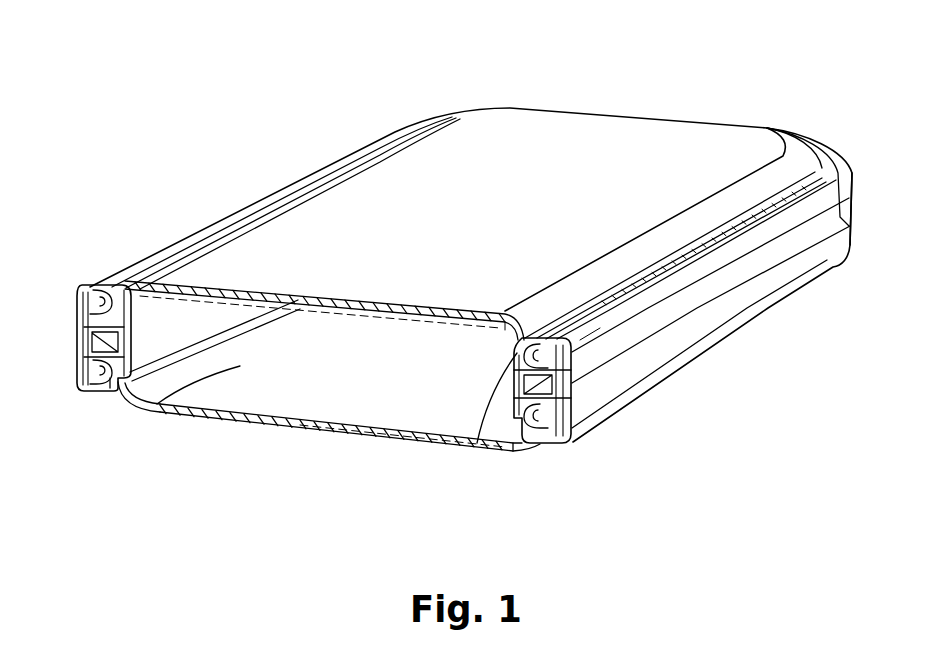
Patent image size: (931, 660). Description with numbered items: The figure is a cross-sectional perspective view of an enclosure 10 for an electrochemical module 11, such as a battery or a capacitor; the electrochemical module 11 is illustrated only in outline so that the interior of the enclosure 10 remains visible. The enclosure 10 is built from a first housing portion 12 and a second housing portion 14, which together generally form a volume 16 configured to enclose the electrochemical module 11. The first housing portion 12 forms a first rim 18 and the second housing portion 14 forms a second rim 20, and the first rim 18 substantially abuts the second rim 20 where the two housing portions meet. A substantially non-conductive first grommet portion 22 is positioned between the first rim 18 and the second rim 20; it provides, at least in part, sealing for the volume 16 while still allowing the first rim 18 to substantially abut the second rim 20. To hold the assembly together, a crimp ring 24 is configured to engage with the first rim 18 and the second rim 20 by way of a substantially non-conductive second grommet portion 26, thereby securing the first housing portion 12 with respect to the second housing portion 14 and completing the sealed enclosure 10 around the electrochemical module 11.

The enclosure 10 is at (160, 507).
The electrochemical module 11 is at (240, 420).
The first housing portion 12 is at (553, 147).
The second housing portion 14 is at (332, 428).
The volume 16 is at (245, 372).
The first rim 18 is at (523, 437).
The second rim 20 is at (543, 433).
The first grommet portion 22 is at (500, 444).
The crimp ring 24 is at (590, 327).
The second grommet portion 26 is at (567, 440).